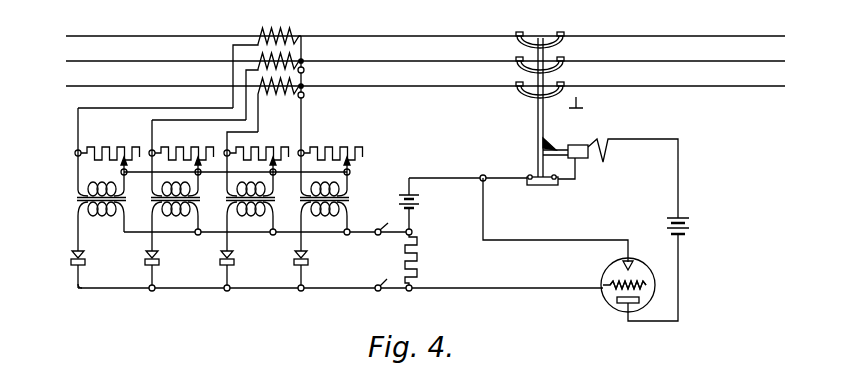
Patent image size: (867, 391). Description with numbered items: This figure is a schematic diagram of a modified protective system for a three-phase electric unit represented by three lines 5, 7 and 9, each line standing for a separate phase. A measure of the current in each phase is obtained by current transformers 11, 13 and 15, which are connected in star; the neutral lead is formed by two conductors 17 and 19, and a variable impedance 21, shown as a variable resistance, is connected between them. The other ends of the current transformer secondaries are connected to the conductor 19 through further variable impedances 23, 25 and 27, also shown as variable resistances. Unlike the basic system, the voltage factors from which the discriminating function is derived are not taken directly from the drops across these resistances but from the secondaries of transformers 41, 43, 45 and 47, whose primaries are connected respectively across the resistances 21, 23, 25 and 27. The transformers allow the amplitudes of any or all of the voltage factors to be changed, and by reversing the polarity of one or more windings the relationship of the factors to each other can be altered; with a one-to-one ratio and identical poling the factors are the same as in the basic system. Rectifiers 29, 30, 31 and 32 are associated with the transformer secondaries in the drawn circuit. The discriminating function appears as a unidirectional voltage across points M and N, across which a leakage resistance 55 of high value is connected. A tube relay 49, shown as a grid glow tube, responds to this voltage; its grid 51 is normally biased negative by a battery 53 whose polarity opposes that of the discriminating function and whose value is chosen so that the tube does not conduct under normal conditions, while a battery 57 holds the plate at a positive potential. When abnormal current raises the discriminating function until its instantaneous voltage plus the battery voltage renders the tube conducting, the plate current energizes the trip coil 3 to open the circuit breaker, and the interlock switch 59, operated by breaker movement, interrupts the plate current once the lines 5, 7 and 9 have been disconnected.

The trip coil 3 is at (580, 142).
The line 5 is at (630, 36).
The line 7 is at (635, 60).
The line 9 is at (632, 86).
The current transformer 11 is at (300, 40).
The current transformer 13 is at (300, 65).
The current transformer 15 is at (300, 90).
The conductor 17 is at (301, 118).
The conductor 19 is at (288, 175).
The variable impedance 21 is at (348, 147).
The variable impedance 23 is at (122, 137).
The variable impedance 25 is at (196, 137).
The variable impedance 27 is at (253, 148).
The rectifier 29 is at (85, 255).
The rectifier 30 is at (159, 255).
The rectifier 31 is at (234, 255).
The rectifier 32 is at (308, 255).
The transformer 41 is at (348, 198).
The transformer 43 is at (78, 200).
The transformer 45 is at (152, 200).
The transformer 47 is at (227, 200).
The tube relay 49 is at (657, 251).
The grid 51 is at (612, 279).
The battery 53 is at (421, 201).
The leakage resistance 55 is at (418, 265).
The battery 57 is at (688, 232).
The interlock switch 59 is at (552, 185).
The point M is at (389, 237).
The point N is at (391, 279).